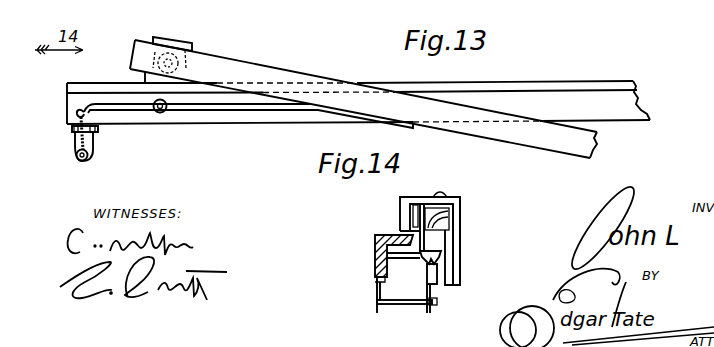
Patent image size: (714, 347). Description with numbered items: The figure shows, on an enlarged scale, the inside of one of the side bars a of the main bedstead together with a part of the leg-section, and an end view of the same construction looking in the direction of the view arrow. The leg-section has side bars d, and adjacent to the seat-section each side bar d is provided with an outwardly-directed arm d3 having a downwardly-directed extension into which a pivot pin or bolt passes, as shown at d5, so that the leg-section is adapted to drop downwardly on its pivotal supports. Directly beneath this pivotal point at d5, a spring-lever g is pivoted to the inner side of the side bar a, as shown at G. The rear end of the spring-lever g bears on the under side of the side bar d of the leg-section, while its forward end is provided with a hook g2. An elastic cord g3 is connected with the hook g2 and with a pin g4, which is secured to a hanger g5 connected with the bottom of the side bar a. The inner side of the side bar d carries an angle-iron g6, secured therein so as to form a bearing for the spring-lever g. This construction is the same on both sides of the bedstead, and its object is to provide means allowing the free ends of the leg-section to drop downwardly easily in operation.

In FIG. 13, the side bar of the bed-frame a is at (603, 81).
In FIG. 14, the side bar of the bed-frame a is at (375, 238).
In FIG. 13, the side bar of the leg-section d is at (241, 61).
In FIG. 14, the side bar of the leg-section d is at (461, 246).
In FIG. 13, the outwardly-directed arm d3 is at (178, 40).
In FIG. 14, the outwardly-directed arm d3 is at (420, 197).
In FIG. 13, the pivotal point of the leg-section d5 is at (212, 57).
In FIG. 14, the pivotal point of the leg-section d5 is at (413, 217).
In FIG. 13, the pivot of the spring-lever G is at (160, 113).
In FIG. 13, the spring-lever g is at (219, 110).
In FIG. 14, the spring-lever g is at (438, 276).
In FIG. 13, the hook g2 is at (77, 112).
In FIG. 14, the hook g2 is at (421, 259).
In FIG. 13, the elastic cord g3 is at (94, 143).
In FIG. 14, the elastic cord g3 is at (433, 296).
In FIG. 13, the pin g4 is at (84, 160).
In FIG. 14, the pin g4 is at (405, 305).
In FIG. 13, the hanger g5 is at (76, 143).
In FIG. 14, the hanger g5 is at (377, 300).
In FIG. 14, the angle-iron g6 is at (449, 220).